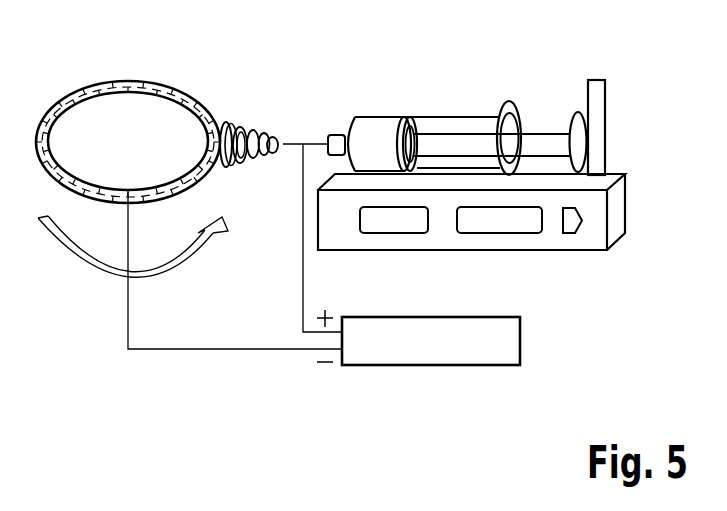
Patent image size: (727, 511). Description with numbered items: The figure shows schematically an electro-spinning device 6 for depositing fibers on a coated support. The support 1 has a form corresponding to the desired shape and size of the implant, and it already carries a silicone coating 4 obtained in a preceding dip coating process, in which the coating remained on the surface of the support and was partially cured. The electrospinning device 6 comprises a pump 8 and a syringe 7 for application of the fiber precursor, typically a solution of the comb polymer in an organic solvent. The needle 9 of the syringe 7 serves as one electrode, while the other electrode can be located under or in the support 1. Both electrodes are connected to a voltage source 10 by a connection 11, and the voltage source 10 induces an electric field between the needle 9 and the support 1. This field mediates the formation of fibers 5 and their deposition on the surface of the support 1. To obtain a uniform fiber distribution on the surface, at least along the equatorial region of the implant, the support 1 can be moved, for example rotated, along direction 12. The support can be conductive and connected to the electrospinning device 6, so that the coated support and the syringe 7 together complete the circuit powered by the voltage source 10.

The support 1 is at (130, 125).
The silicone coating 4 is at (172, 87).
The fibers 5 is at (248, 127).
The electrospinning device 6 is at (631, 75).
The syringe 7 is at (452, 115).
The pump 8 is at (578, 252).
The needle 9 is at (302, 143).
The voltage source 10 is at (425, 340).
The connection 11 is at (205, 350).
The direction 12 is at (70, 262).